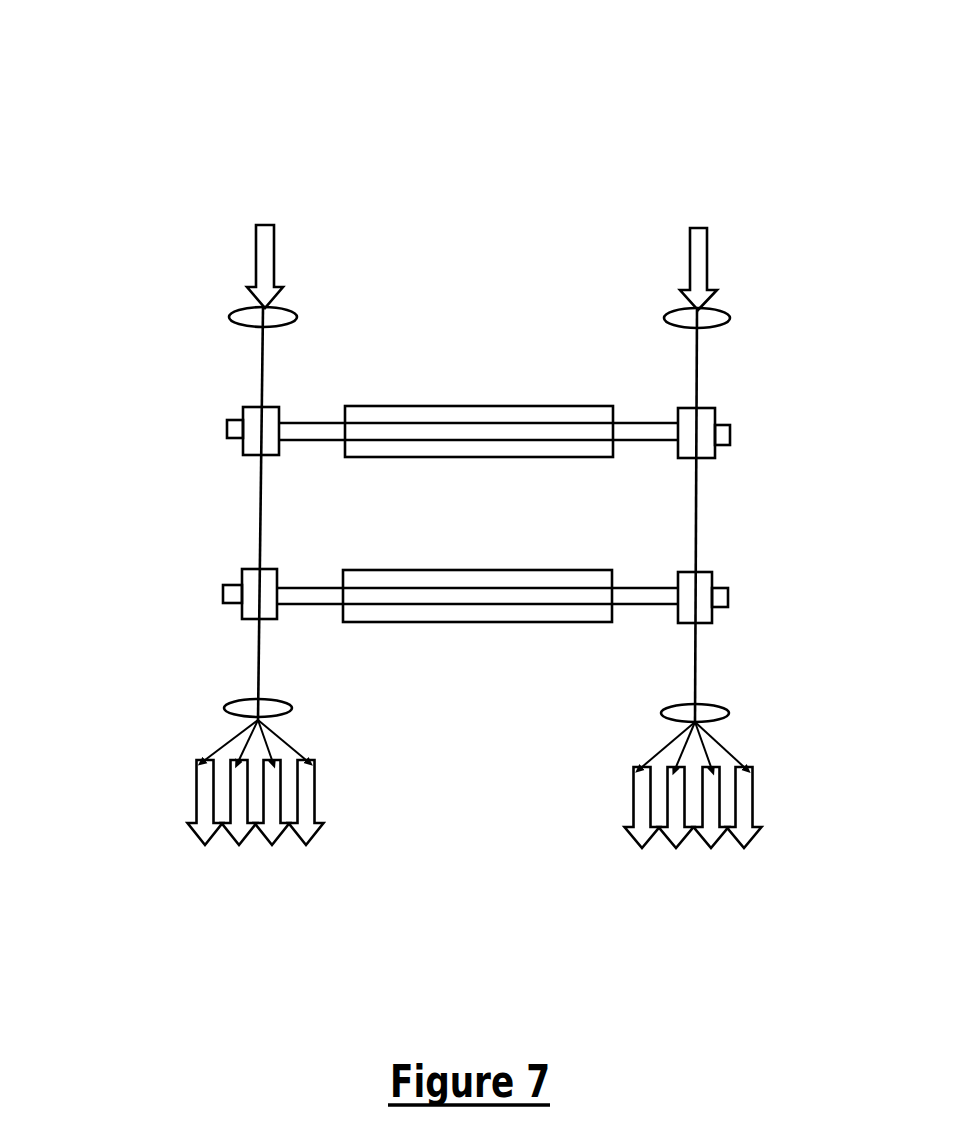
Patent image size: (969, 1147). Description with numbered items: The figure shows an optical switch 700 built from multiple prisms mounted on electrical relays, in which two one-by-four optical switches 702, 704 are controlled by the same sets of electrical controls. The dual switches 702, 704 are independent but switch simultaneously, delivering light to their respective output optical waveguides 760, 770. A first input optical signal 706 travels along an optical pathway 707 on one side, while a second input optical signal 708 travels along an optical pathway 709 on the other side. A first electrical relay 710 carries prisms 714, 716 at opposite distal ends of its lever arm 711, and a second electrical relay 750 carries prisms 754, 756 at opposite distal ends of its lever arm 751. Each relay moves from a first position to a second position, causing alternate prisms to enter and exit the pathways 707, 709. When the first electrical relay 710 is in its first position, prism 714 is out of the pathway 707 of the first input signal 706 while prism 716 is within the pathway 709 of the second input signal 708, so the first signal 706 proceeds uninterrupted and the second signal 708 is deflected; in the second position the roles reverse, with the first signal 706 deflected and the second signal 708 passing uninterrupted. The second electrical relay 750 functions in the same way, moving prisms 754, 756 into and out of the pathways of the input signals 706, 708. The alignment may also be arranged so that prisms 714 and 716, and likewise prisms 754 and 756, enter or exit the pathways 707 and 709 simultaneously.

The optical switch 700 is at (132, 90).
The first 1×4 optical switch 702 is at (713, 202).
The second 1×4 optical switch 704 is at (288, 190).
The first input optical signal 706 is at (700, 262).
The optical pathway of first input optical signal 707 is at (698, 377).
The second input optical signal 708 is at (260, 257).
The optical pathway of second input optical signal 709 is at (263, 363).
The first electrical relay 710 is at (420, 412).
The lever arm 711 is at (508, 420).
The prism 714 is at (697, 425).
The prism 716 is at (247, 452).
The second electrical relay 750 is at (410, 612).
The lever arm 751 is at (475, 594).
The prism 754 is at (705, 585).
The prism 756 is at (247, 612).
The output optical waveguides 760 is at (780, 800).
The output optical waveguides 770 is at (165, 802).